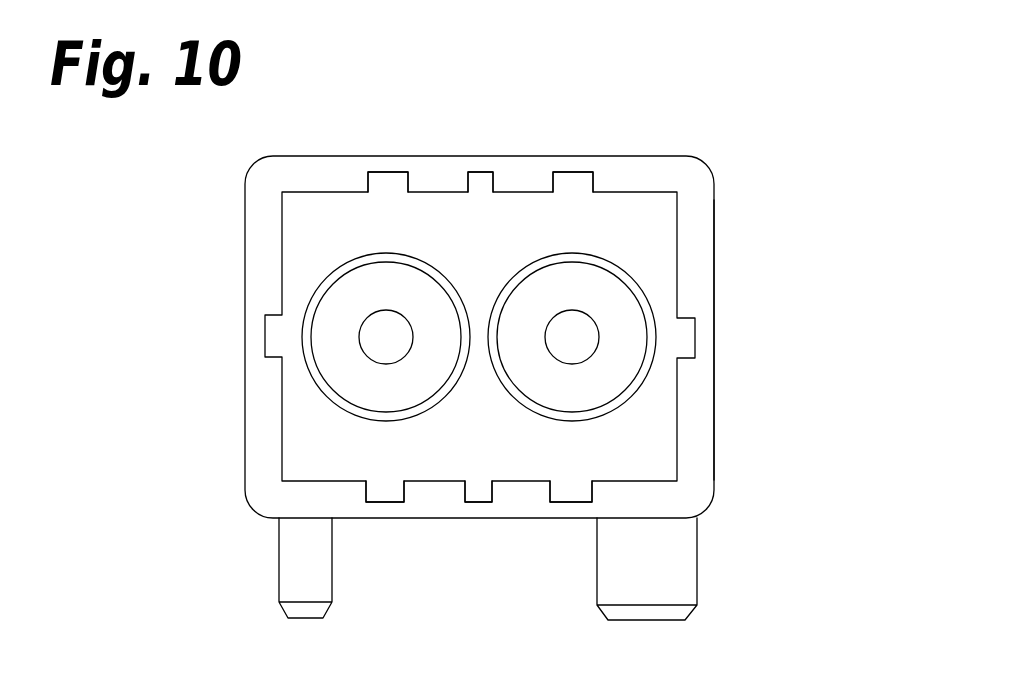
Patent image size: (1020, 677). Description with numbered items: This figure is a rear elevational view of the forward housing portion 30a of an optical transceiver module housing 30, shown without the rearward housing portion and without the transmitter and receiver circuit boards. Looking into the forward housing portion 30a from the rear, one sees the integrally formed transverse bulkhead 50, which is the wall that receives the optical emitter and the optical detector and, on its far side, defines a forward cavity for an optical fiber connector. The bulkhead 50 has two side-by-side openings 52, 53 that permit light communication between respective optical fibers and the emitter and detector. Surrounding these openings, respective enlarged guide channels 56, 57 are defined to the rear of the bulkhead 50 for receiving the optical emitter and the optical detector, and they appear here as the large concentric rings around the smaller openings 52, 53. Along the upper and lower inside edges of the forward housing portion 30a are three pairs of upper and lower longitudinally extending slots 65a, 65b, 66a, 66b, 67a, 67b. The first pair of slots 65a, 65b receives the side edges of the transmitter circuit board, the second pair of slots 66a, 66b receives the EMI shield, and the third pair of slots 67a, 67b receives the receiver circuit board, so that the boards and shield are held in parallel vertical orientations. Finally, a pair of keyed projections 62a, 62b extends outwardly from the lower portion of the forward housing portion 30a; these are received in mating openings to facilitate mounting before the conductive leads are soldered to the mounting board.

The housing 30 is at (749, 125).
The forward housing portion 30a is at (715, 242).
The transverse bulkhead 50 is at (322, 443).
The opening 52 is at (388, 333).
The opening 53 is at (577, 338).
The enlarged guide channel 56 is at (330, 348).
The enlarged guide channel 57 is at (608, 385).
The keyed projection 62a is at (297, 563).
The keyed projection 62b is at (683, 583).
The upper slot 65a is at (388, 185).
The upper slot 66a is at (480, 182).
The upper slot 67a is at (572, 178).
The lower slot 65b is at (385, 490).
The lower slot 66b is at (480, 492).
The lower slot 67b is at (573, 492).